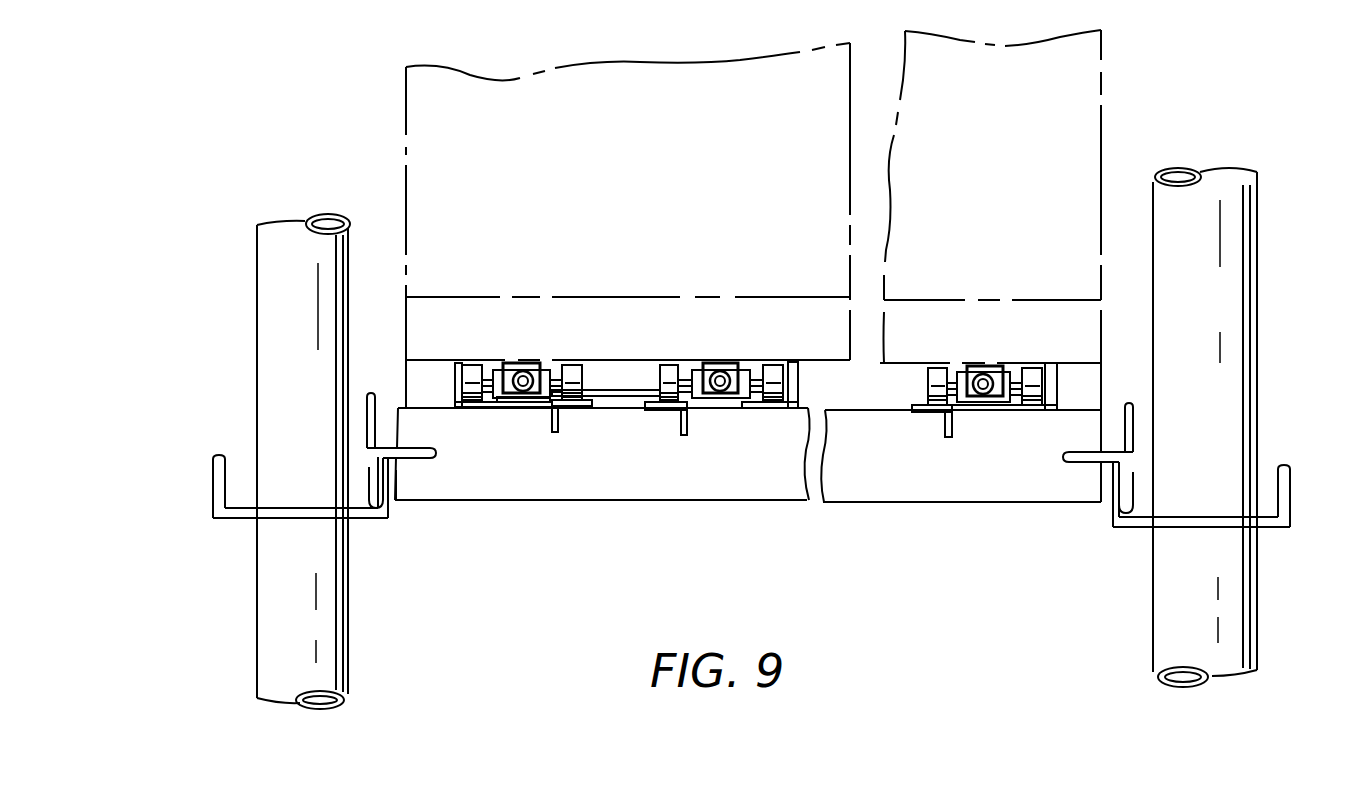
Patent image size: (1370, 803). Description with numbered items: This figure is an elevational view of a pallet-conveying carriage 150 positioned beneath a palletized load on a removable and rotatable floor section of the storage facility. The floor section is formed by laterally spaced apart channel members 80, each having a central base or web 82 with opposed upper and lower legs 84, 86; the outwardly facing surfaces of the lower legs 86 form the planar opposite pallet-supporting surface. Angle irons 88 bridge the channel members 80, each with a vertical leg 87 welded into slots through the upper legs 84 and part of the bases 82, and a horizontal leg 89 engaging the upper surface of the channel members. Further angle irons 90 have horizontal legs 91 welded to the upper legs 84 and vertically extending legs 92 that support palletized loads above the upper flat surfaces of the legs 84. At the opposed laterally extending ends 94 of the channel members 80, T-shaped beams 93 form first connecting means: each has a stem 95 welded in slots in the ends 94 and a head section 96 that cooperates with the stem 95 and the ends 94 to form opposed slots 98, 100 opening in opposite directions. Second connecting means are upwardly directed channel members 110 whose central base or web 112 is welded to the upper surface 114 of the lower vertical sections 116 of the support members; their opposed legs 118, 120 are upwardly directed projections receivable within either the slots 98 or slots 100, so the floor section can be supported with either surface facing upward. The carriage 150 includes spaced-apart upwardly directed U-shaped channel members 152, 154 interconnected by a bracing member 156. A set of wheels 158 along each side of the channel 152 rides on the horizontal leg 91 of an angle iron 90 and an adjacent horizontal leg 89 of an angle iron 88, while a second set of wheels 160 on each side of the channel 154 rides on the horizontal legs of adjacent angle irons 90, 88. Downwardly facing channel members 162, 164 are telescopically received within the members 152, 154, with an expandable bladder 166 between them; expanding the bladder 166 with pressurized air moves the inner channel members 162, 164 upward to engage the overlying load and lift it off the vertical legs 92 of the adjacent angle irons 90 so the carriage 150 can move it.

The channel member 80 is at (748, 488).
The central base or web 82 is at (677, 486).
The upper leg 84 is at (826, 408).
The lower leg 86 is at (895, 508).
The vertical leg 87 is at (560, 430).
The angle iron 88 is at (756, 422).
The horizontal leg 89 is at (567, 412).
The angle iron 90 is at (721, 388).
The horizontal leg 91 is at (470, 406).
The vertically extending leg 92 is at (453, 363).
The T-shaped beam 93 is at (749, 396).
The laterally extending end 94 is at (395, 498).
The stem 95 is at (413, 458).
The head section 96 is at (748, 461).
The slot 98 is at (380, 404).
The slot 100 is at (752, 485).
The channel member 110 is at (763, 514).
The central base or web 112 is at (352, 515).
The upper surface 114 is at (313, 516).
The lower vertical section 116 is at (338, 620).
The leg 118 is at (380, 488).
The leg 120 is at (213, 488).
The pallet-conveying carriage 150 is at (721, 373).
The U-shaped channel member 152 is at (705, 410).
The U-shaped channel member 154 is at (533, 398).
The bracing member 156 is at (607, 390).
The set of wheels 158 is at (669, 366).
The set of wheels 160 is at (479, 366).
The downwardly facing channel member 162 is at (721, 368).
The downwardly facing channel member 164 is at (743, 332).
The expandable bladder 166 is at (532, 368).